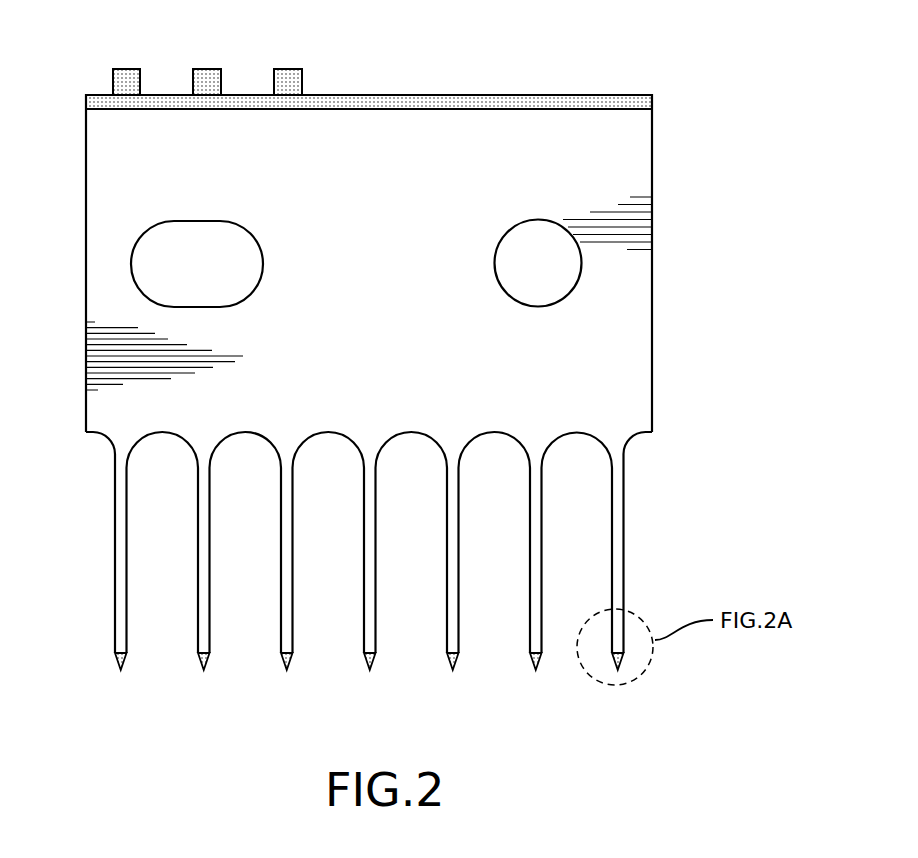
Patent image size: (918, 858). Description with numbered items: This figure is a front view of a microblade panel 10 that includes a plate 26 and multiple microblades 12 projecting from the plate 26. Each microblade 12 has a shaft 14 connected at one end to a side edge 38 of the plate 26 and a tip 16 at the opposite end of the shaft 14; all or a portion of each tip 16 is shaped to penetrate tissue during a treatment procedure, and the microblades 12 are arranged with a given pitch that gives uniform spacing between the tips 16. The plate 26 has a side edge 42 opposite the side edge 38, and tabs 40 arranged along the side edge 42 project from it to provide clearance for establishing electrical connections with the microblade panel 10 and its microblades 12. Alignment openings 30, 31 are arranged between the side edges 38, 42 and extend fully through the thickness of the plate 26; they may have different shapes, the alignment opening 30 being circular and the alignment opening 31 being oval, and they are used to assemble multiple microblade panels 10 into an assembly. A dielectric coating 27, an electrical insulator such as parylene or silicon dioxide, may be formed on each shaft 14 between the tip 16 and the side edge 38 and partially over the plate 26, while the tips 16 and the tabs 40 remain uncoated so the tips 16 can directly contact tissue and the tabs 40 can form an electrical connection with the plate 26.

The microblade panel 10 is at (677, 96).
The microblade 12 is at (126, 491).
The shaft 14 is at (126, 534).
The tip 16 is at (126, 657).
The plate 26 is at (637, 172).
The dielectric coating 27 is at (615, 357).
The alignment opening 30 is at (563, 262).
The alignment opening 31 is at (152, 259).
The side edge 38 is at (642, 437).
The tab 40 is at (125, 69).
The side edge 42 is at (403, 94).